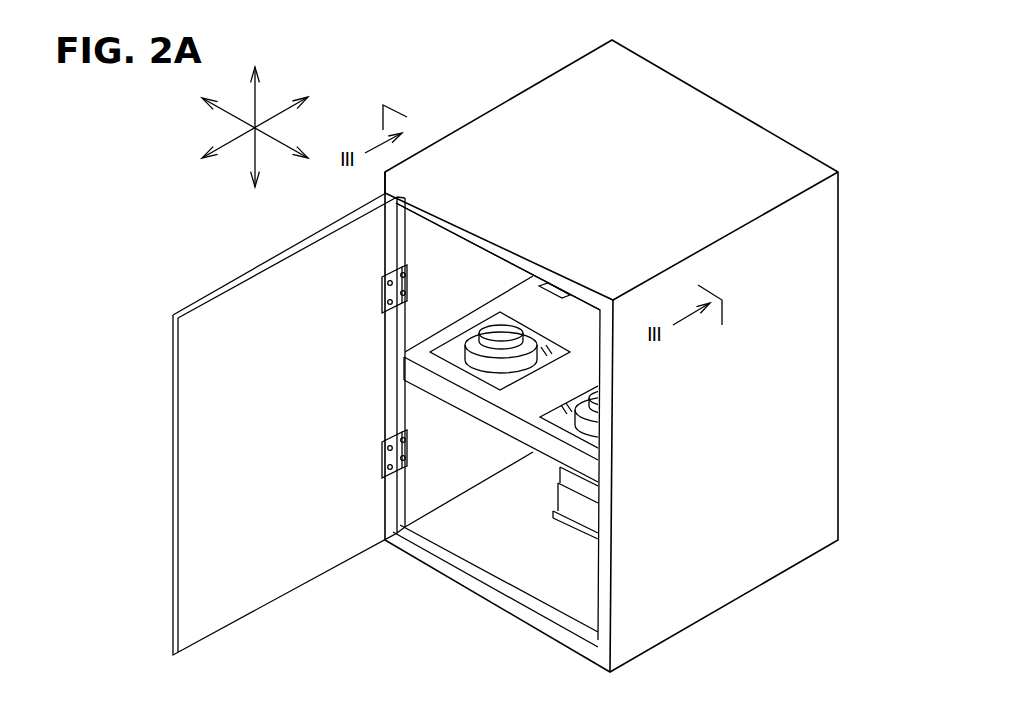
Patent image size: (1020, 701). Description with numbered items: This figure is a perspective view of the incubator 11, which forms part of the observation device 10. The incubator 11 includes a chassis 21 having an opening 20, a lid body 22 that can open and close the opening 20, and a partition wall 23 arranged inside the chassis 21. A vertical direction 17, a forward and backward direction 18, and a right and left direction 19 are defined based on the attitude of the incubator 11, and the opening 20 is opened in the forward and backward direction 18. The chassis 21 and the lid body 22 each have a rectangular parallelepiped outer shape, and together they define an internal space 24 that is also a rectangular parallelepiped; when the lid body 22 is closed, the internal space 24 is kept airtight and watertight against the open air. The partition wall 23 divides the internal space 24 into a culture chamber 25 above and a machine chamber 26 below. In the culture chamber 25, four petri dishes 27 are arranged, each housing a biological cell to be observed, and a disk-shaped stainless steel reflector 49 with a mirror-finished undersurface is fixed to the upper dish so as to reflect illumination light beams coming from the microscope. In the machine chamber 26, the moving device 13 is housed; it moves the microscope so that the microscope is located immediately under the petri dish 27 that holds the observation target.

The observation device 10 is at (737, 75).
The incubator 11 is at (817, 232).
The moving device 13 is at (573, 508).
The vertical direction 17 is at (258, 101).
The forward and backward direction 18 is at (233, 145).
The right and left direction 19 is at (278, 139).
The opening 20 is at (463, 236).
The chassis 21 is at (812, 348).
The lid body 22 is at (293, 308).
The partition wall 23 is at (550, 452).
The internal space 24 is at (425, 638).
The culture chamber 25 is at (433, 302).
The machine chamber 26 is at (433, 485).
The petri dish 27 is at (487, 367).
The reflector 49 is at (498, 333).